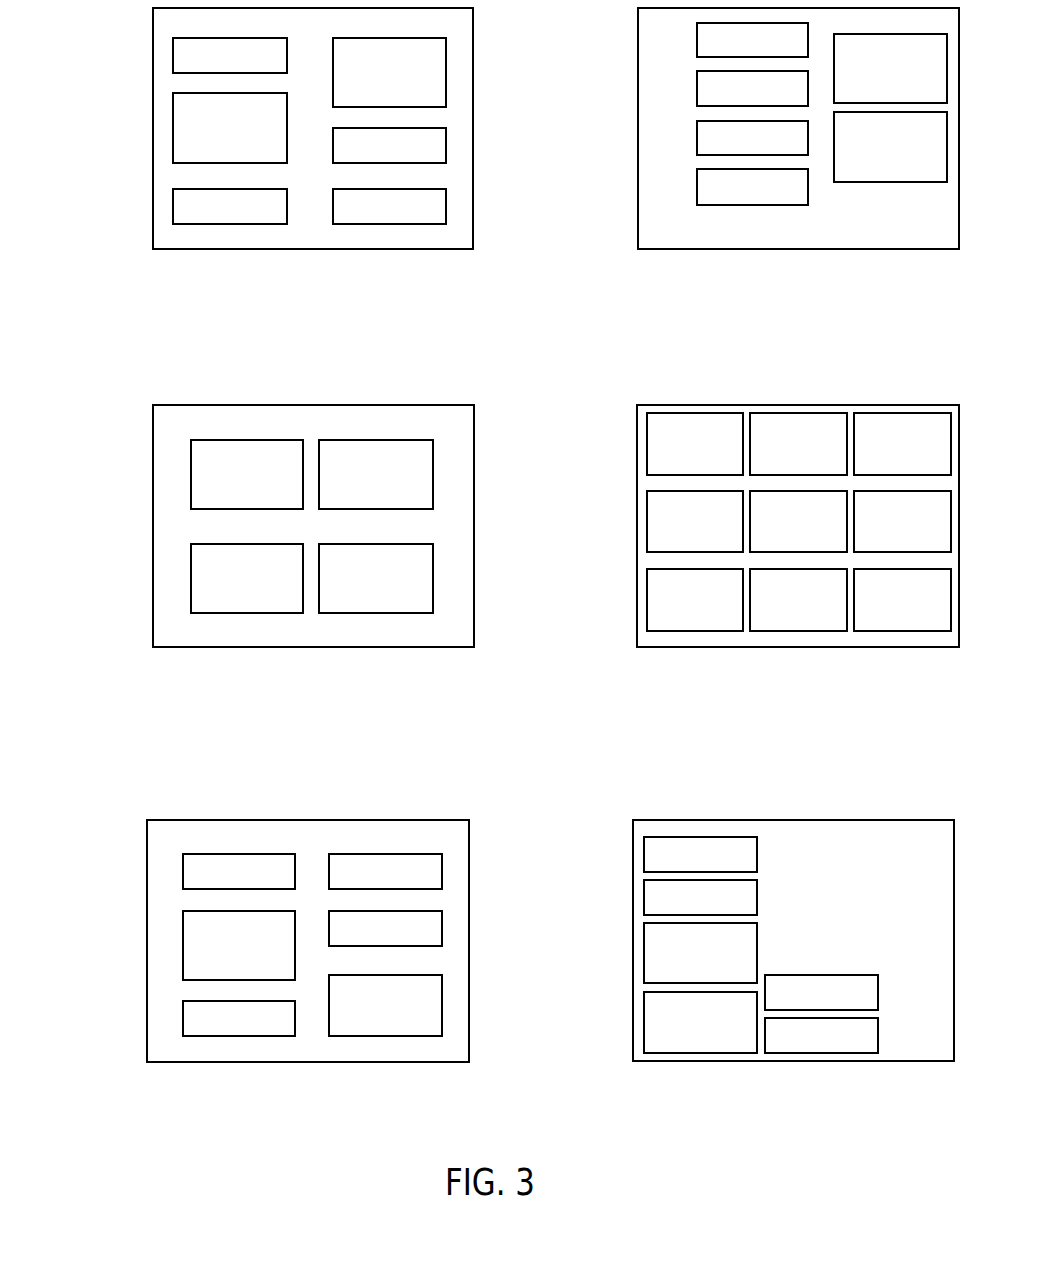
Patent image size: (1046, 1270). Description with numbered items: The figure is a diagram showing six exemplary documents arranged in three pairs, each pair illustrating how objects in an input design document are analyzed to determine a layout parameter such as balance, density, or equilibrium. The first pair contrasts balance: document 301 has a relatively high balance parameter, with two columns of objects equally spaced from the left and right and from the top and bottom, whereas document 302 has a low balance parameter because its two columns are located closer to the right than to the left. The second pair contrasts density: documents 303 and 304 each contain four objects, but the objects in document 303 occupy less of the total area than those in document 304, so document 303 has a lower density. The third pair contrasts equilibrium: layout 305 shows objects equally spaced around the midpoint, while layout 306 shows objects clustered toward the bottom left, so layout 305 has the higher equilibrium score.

The document 301 is at (173, 123).
The document 302 is at (637, 130).
The document 303 is at (186, 529).
The document 304 is at (636, 532).
The layout 305 is at (176, 947).
The layout 306 is at (632, 949).